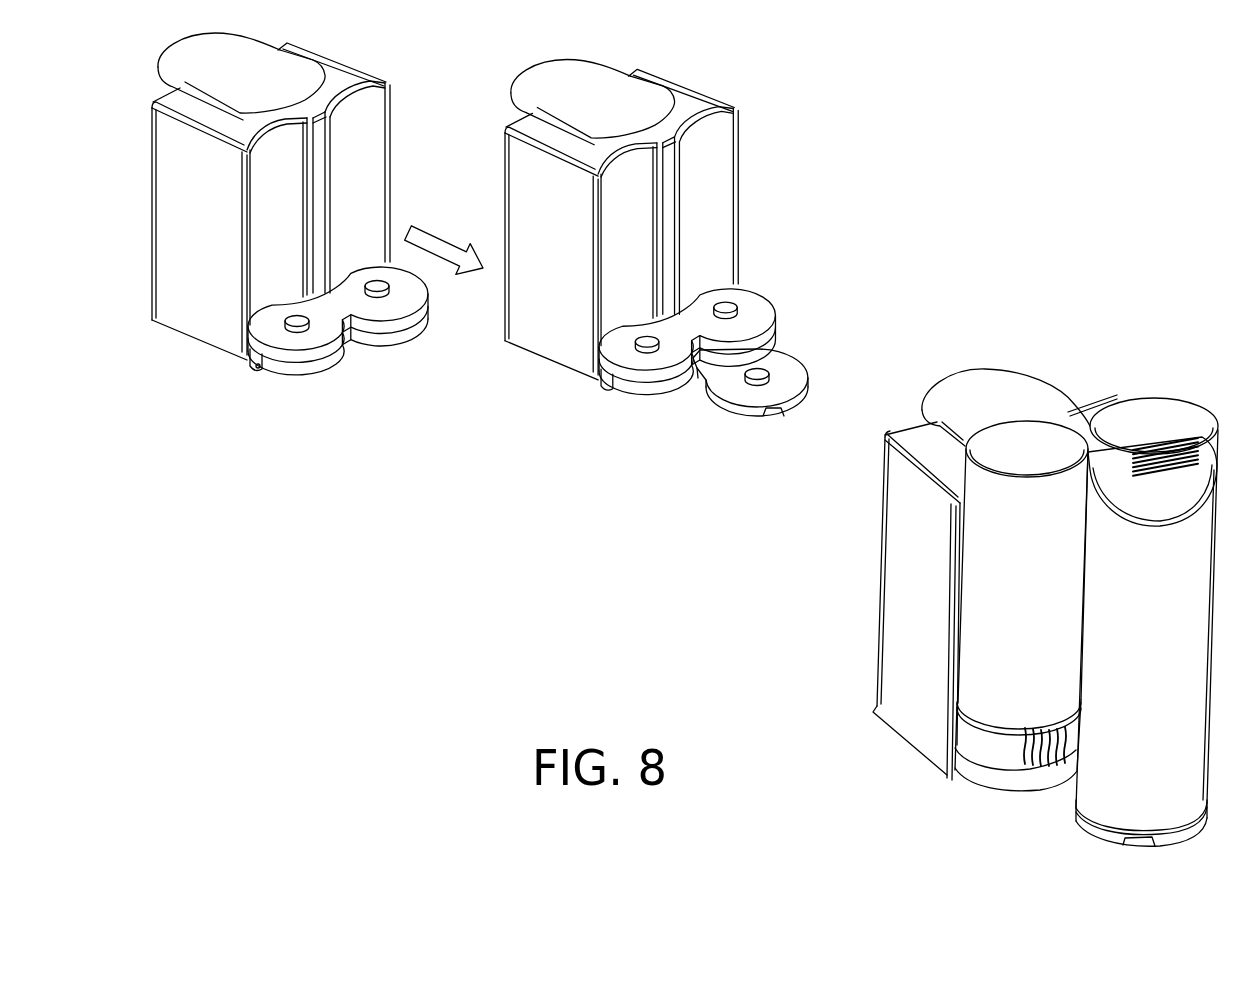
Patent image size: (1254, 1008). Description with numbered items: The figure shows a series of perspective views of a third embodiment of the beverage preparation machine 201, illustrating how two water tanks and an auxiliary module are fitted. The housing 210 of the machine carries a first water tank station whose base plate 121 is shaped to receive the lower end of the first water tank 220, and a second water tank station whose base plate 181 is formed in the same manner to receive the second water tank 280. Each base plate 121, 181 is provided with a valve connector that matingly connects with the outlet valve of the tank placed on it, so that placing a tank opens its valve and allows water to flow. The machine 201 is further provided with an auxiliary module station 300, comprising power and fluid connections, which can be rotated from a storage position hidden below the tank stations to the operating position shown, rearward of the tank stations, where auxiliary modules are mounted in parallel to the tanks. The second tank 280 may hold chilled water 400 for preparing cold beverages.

The beverage preparation machine 201 is at (120, 110).
The holder housing 210 is at (165, 237).
The base plate 121 is at (262, 362).
The base plate 181 is at (385, 302).
The auxiliary module station 300 is at (802, 352).
The second water tank 280 is at (1142, 405).
The first water tank 220 is at (975, 606).
The water 400 is at (1103, 652).